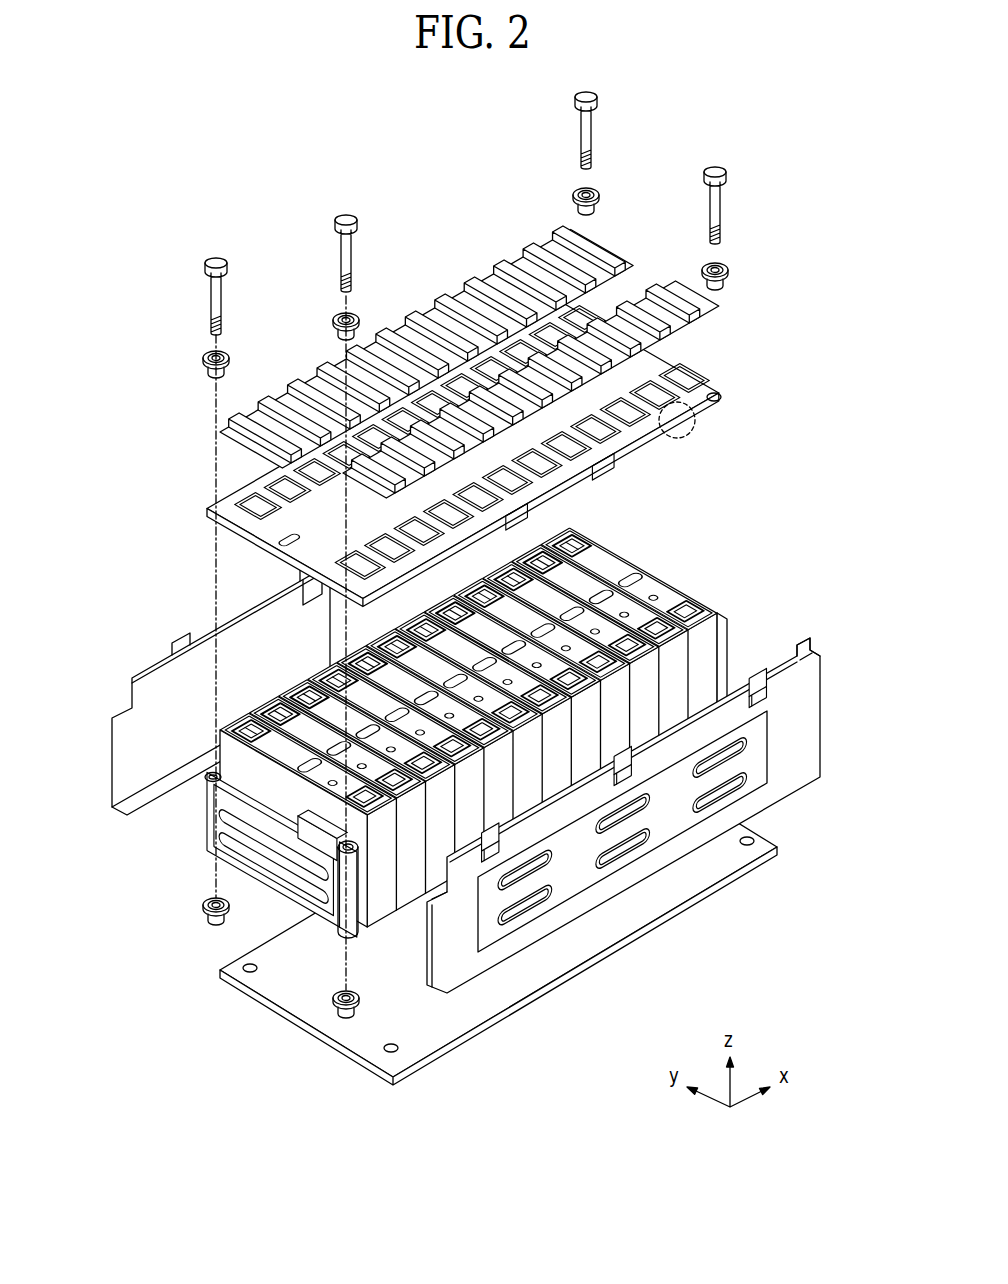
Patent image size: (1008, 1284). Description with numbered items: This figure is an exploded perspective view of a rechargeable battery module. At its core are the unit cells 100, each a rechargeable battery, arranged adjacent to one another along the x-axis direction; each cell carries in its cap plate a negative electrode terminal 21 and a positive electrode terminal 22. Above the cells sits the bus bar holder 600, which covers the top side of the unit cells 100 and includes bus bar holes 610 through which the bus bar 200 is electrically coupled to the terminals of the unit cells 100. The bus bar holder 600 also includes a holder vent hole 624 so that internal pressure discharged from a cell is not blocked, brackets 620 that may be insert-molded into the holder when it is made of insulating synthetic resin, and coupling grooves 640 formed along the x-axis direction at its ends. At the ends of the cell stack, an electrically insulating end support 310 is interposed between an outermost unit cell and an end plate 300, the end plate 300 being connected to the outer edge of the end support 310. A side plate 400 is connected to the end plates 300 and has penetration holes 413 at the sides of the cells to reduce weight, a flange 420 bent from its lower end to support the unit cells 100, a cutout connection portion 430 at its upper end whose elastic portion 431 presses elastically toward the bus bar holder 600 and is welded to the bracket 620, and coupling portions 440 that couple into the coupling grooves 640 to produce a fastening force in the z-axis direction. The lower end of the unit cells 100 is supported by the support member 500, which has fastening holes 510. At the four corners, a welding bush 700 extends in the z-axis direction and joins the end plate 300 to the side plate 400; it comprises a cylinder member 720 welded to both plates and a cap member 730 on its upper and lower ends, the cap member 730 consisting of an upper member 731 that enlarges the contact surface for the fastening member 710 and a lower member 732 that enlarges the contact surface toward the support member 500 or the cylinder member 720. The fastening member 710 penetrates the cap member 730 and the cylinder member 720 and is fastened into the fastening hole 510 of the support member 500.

The unit cell 100 is at (468, 778).
The negative electrode terminal 21 is at (244, 722).
The positive electrode terminal 22 is at (277, 793).
The bus bar 200 is at (470, 298).
The end plate 300 is at (261, 862).
The end support 310 is at (222, 858).
The side plate 400 is at (635, 792).
The penetration hole 413 is at (627, 852).
The flange 420 is at (145, 810).
The connection portion 430 is at (753, 678).
The elastic portion 431 is at (770, 712).
The coupling portion 440 is at (797, 646).
The support member 500 is at (498, 923).
The fastening hole 510 is at (396, 1052).
The bus bar holder 600 is at (494, 455).
The bus bar hole 610 is at (603, 445).
The bracket 620 is at (684, 437).
The holder vent hole 624 is at (290, 540).
The coupling groove 640 is at (722, 400).
The welding bush 700 is at (424, 601).
The fastening member 710 is at (336, 246).
The cylinder member 720 is at (332, 855).
The cap member 730 is at (452, 649).
The upper member 731 is at (343, 312).
The lower member 732 is at (346, 1010).